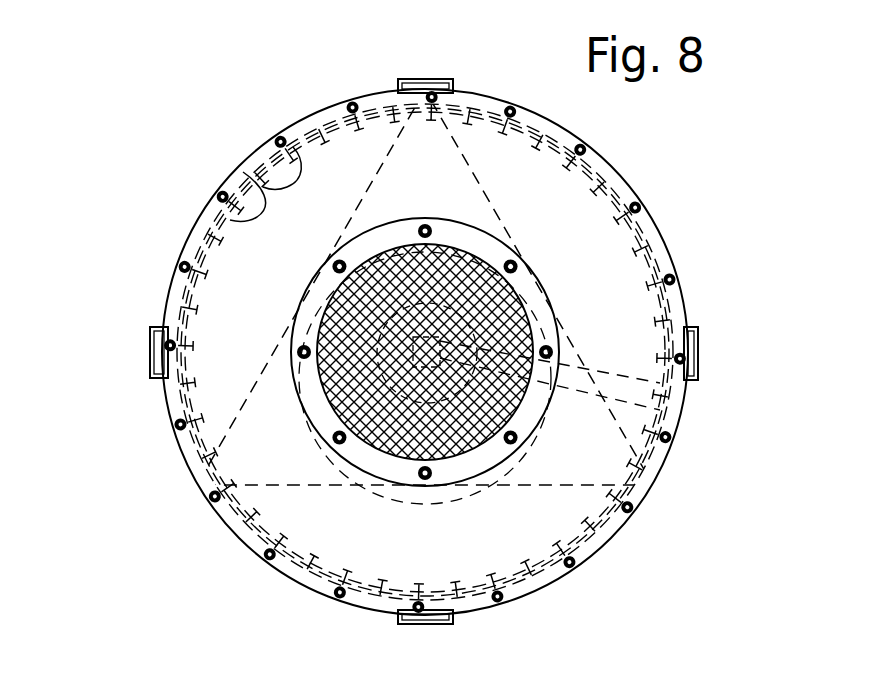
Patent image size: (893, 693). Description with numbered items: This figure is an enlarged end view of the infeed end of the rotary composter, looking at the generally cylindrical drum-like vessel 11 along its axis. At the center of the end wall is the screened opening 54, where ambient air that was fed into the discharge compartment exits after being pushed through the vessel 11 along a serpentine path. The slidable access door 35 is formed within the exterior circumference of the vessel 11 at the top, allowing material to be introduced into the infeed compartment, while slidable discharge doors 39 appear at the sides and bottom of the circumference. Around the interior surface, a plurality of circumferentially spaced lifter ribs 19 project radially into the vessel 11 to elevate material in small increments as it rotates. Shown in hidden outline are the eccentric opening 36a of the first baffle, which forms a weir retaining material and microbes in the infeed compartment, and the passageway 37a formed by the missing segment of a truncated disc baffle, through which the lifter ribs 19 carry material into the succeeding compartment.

The vessel 11 is at (663, 474).
The lifter ribs 19 is at (243, 172).
The access door 35 is at (405, 82).
The eccentric opening 36a is at (458, 500).
The passageway 37a is at (486, 192).
The discharge doors 39 is at (700, 360).
The screened opening 54 is at (520, 298).